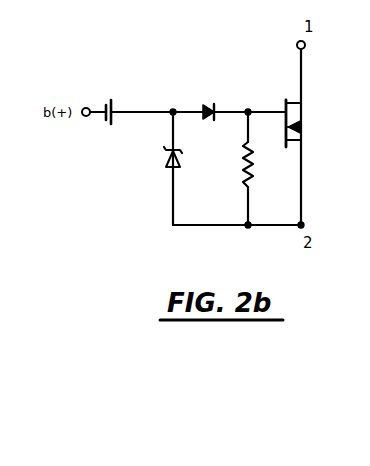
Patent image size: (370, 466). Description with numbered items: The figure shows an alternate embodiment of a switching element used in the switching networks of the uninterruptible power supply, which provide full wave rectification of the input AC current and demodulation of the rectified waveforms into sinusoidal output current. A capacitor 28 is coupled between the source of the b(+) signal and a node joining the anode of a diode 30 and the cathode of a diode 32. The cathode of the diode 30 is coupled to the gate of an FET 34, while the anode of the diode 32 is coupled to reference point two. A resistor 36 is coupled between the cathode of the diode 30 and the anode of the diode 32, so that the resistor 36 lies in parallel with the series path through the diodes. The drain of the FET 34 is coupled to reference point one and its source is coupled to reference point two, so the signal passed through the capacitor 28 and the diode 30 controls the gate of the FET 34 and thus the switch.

The capacitor 28 is at (113, 101).
The diode 30 is at (207, 103).
The diode 32 is at (165, 159).
The FET 34 is at (286, 99).
The resistor 36 is at (243, 165).